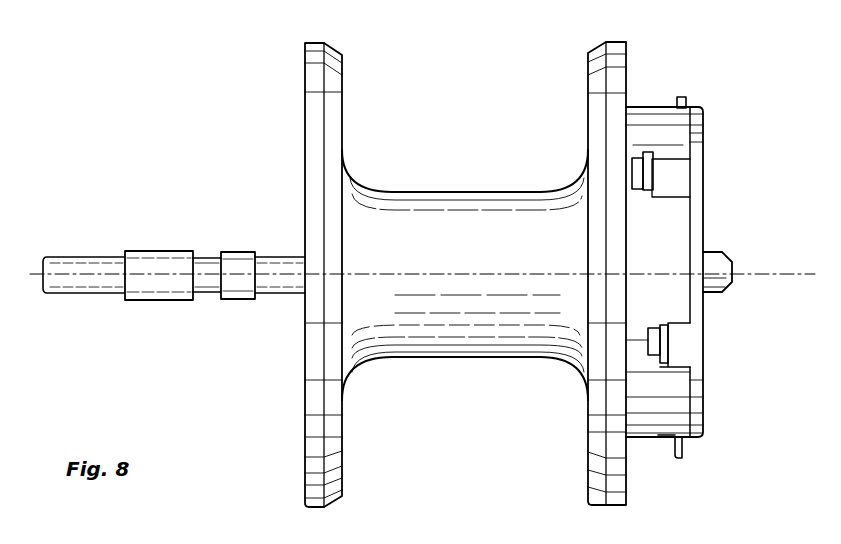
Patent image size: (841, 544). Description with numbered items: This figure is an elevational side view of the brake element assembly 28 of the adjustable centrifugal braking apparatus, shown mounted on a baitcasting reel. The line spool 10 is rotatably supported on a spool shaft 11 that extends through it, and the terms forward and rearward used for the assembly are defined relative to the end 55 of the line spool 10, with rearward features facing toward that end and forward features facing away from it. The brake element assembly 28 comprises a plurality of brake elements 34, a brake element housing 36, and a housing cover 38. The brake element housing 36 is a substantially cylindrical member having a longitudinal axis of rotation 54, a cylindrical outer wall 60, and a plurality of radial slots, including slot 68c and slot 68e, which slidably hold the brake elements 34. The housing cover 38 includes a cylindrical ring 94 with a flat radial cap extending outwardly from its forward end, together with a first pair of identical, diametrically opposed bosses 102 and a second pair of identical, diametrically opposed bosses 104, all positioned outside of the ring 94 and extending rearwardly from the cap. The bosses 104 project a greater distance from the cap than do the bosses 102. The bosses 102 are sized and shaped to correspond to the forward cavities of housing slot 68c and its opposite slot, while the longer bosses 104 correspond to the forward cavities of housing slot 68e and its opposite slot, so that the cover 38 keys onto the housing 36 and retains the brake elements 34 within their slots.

The line spool 10 is at (335, 92).
The spool shaft 11 is at (168, 252).
The brake element assembly 28 is at (713, 104).
The brake elements 34 is at (681, 97).
The brake element housing 36 is at (665, 215).
The housing cover 38 is at (697, 300).
The longitudinal axis of rotation 54 is at (803, 280).
The end of line spool 55 is at (629, 475).
The cylindrical outer wall 60 is at (637, 214).
The radial slot 68c is at (650, 330).
The radial slot 68e is at (635, 160).
The cylindrical ring 94 is at (697, 315).
The first pair of bosses 102 is at (676, 348).
The second pair of bosses 104 is at (672, 190).